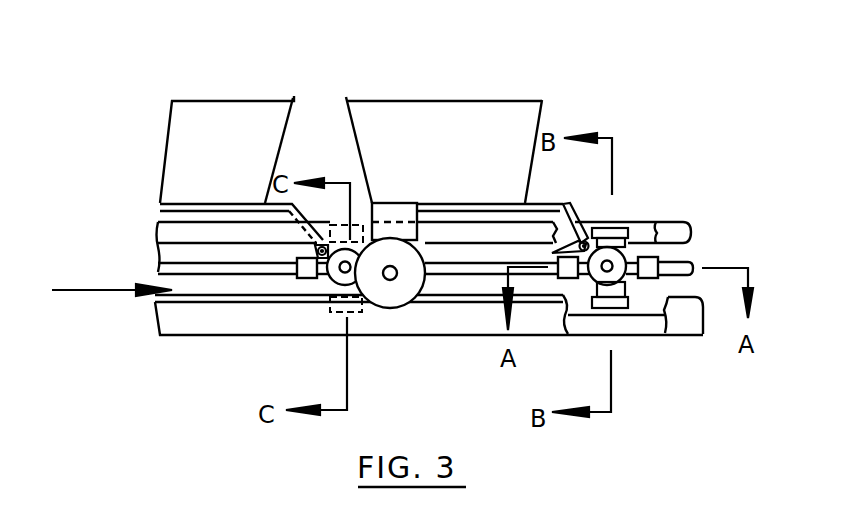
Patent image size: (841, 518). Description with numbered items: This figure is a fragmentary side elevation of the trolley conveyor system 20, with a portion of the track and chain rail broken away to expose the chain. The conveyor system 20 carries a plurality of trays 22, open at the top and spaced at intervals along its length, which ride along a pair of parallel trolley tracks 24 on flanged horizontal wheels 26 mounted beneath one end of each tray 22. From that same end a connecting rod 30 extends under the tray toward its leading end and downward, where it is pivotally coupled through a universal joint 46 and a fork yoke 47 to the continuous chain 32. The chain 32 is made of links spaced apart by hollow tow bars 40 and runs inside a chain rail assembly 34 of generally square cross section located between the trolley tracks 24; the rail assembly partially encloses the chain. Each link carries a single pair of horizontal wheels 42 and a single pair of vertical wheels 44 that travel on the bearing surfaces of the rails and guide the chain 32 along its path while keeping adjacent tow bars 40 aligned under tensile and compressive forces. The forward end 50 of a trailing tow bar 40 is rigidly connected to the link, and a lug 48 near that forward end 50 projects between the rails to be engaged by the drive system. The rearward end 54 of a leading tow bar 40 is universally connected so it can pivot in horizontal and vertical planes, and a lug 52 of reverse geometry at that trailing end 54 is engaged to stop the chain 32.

The conveyor system 20 is at (466, 62).
The tray 22 is at (220, 100).
The trolley track 24 is at (172, 340).
The flanged horizontal wheel 26 is at (393, 308).
The connecting rod 30 is at (537, 203).
The continuous chain 32 is at (112, 280).
The chain rail assembly 34 is at (670, 221).
The tow bar 40 is at (207, 276).
The horizontal wheel 42 is at (340, 313).
The vertical wheel 44 is at (625, 227).
The universal joint 46 is at (588, 238).
The fork yoke 47 is at (579, 206).
The lug 48 is at (310, 285).
The forward end of tow bar 50 is at (270, 279).
The lug 52 is at (652, 279).
The rearward end of tow bar 54 is at (683, 277).